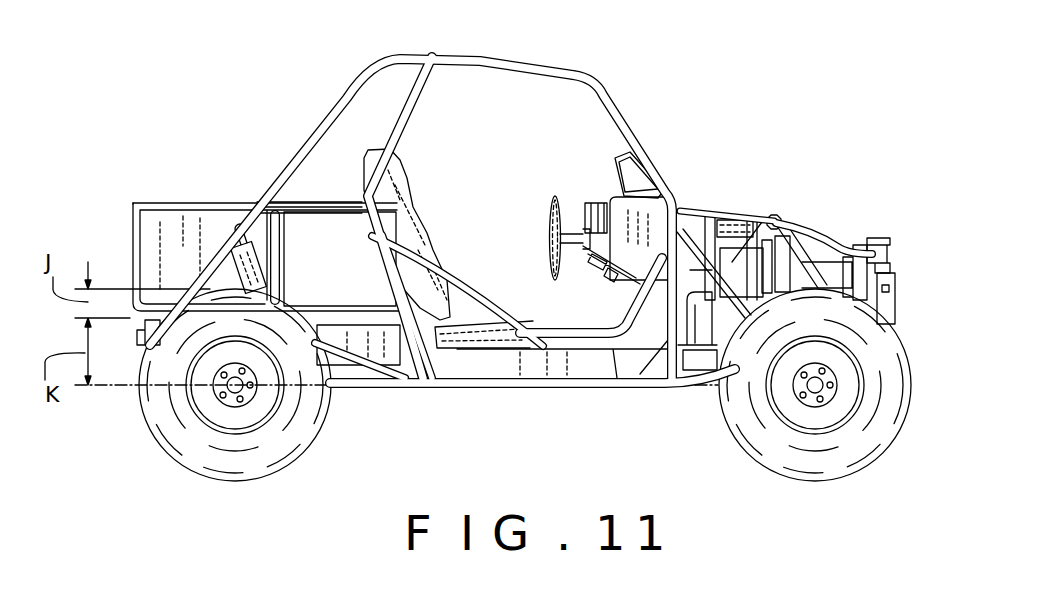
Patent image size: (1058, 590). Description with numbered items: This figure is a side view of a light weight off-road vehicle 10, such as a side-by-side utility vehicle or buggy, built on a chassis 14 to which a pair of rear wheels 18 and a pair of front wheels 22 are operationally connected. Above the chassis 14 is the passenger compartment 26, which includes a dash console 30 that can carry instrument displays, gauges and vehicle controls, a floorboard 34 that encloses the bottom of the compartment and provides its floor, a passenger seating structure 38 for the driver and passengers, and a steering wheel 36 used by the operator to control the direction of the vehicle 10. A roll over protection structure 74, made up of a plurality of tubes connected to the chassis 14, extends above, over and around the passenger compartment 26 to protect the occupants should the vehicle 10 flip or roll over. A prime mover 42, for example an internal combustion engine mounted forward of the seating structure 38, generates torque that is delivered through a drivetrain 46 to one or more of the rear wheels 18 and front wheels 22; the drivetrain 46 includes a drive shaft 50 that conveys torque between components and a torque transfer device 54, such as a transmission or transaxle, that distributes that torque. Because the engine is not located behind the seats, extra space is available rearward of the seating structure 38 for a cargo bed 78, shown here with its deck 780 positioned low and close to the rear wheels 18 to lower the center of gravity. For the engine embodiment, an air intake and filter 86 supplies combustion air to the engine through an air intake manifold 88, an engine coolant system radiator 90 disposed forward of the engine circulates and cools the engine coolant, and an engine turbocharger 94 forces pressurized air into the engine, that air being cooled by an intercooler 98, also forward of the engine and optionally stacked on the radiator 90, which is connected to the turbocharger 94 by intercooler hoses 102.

The off-road vehicle 10 is at (738, 92).
The chassis 14 is at (187, 200).
The rear wheels 18 is at (273, 442).
The front wheels 22 is at (870, 447).
The passenger compartment 26 is at (520, 104).
The dash console 30 is at (645, 156).
The floorboard 34 is at (550, 370).
The steering wheel 36 is at (557, 196).
The passenger seating structure 38 is at (445, 239).
The prime mover 42 is at (422, 218).
The drivetrain 46 is at (517, 355).
The drive shaft 50 is at (234, 403).
The torque transfer device 54 is at (360, 367).
The roll over protection structure 74 is at (389, 130).
The cargo bed 78 is at (218, 188).
The side panel 780 is at (355, 307).
The air intake and filter 86 is at (693, 215).
The air intake manifold 88 is at (746, 215).
The engine coolant system radiator 90 is at (896, 300).
The engine turbocharger 94 is at (810, 225).
The intercooler 98 is at (893, 248).
The intercooler hoses 102 is at (867, 240).